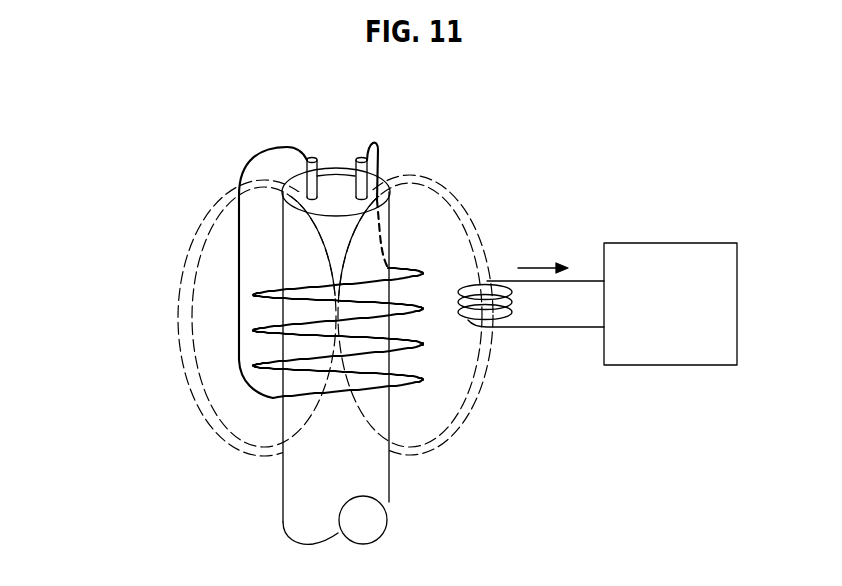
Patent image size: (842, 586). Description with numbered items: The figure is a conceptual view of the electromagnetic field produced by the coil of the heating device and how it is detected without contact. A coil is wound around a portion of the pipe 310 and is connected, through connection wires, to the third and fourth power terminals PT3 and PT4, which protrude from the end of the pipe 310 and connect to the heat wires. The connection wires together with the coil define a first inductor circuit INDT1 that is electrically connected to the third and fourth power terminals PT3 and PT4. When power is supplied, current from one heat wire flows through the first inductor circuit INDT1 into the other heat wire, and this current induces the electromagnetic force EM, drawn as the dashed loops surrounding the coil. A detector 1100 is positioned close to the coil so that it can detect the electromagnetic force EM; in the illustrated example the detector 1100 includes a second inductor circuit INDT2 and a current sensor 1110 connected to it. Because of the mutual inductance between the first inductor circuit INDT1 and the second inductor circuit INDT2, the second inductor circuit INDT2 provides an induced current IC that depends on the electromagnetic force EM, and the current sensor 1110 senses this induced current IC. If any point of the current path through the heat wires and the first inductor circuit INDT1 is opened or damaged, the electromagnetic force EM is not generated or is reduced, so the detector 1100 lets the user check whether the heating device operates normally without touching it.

The pipe 310 is at (305, 490).
The electromagnetic force EM is at (467, 212).
The first inductor circuit INDT1 is at (307, 283).
The second inductor circuit INDT2 is at (507, 312).
The third power terminal PT3 is at (303, 167).
The fourth power terminal PT4 is at (352, 158).
The induced current IC is at (543, 254).
The detector 1100 is at (628, 193).
The current sensor 1110 is at (683, 243).